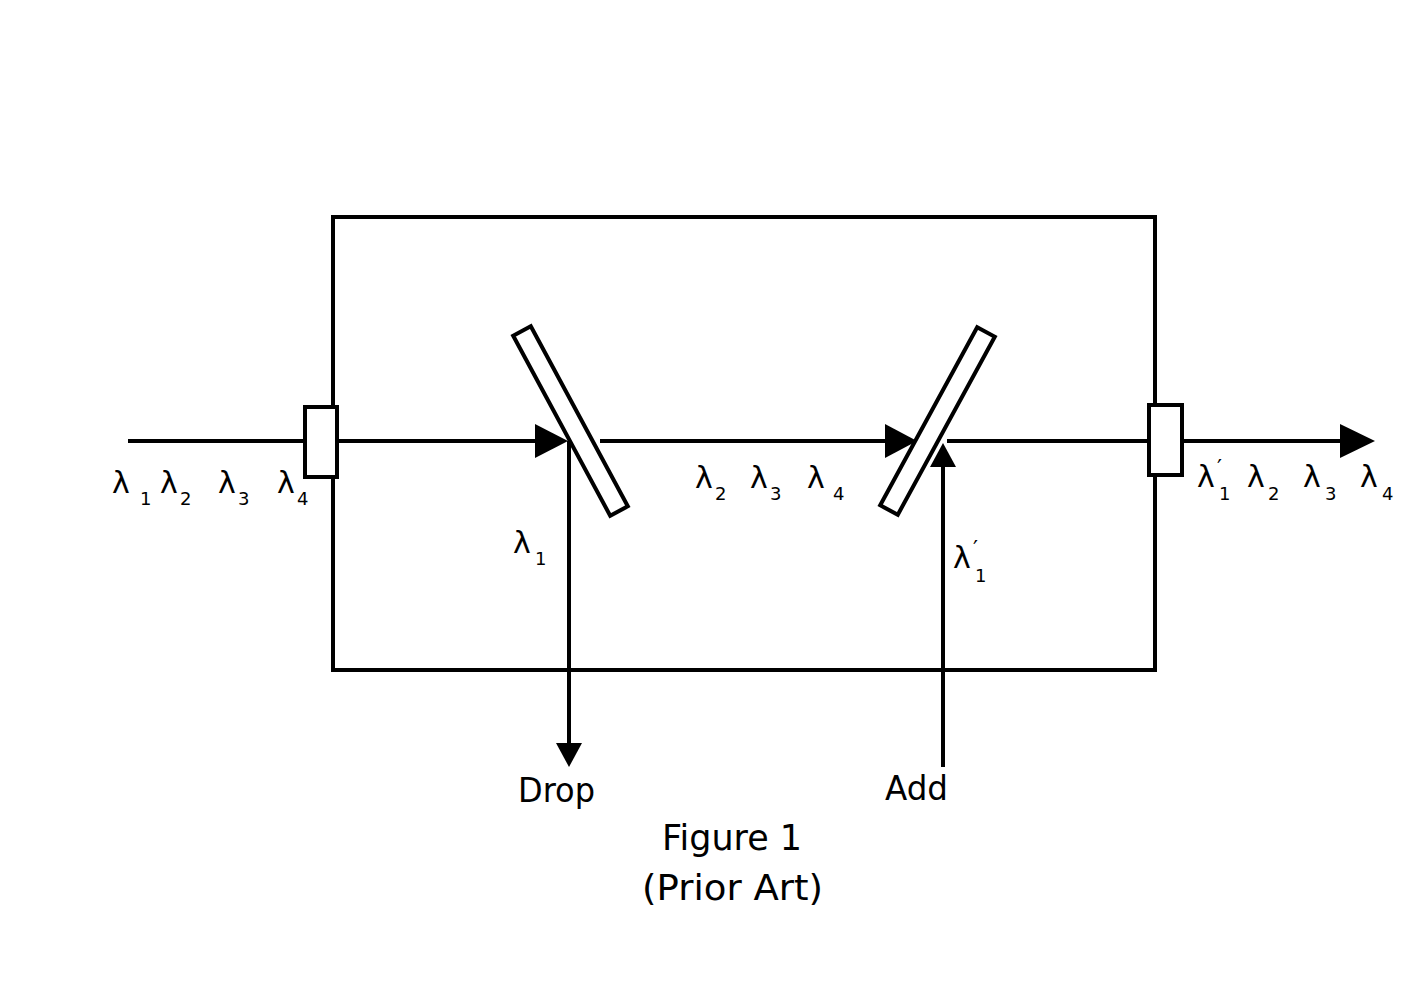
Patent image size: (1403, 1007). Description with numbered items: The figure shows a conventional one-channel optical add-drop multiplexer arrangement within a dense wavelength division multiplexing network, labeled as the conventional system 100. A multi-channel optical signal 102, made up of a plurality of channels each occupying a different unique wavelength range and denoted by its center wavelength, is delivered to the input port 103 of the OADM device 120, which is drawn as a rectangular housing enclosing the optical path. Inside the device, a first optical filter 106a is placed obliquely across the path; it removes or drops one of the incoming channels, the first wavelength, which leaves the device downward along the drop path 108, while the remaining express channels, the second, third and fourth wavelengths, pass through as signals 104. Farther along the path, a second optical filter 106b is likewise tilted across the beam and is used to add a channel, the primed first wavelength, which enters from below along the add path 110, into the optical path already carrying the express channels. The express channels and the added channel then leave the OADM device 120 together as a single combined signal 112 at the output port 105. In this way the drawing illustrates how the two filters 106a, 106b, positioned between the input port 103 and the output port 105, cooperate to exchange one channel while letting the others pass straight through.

The conventional system 100 is at (513, 67).
The multi-channel optical signal 102 is at (208, 440).
The input port 103 is at (320, 407).
The signals 104 is at (776, 438).
The output port 105 is at (1178, 403).
The first optical filter 106a is at (530, 327).
The second optical filter 106b is at (977, 325).
The drop port path 108 is at (571, 612).
The add port path 110 is at (940, 625).
The combined signal 112 is at (1015, 438).
The OADM device 120 is at (672, 214).